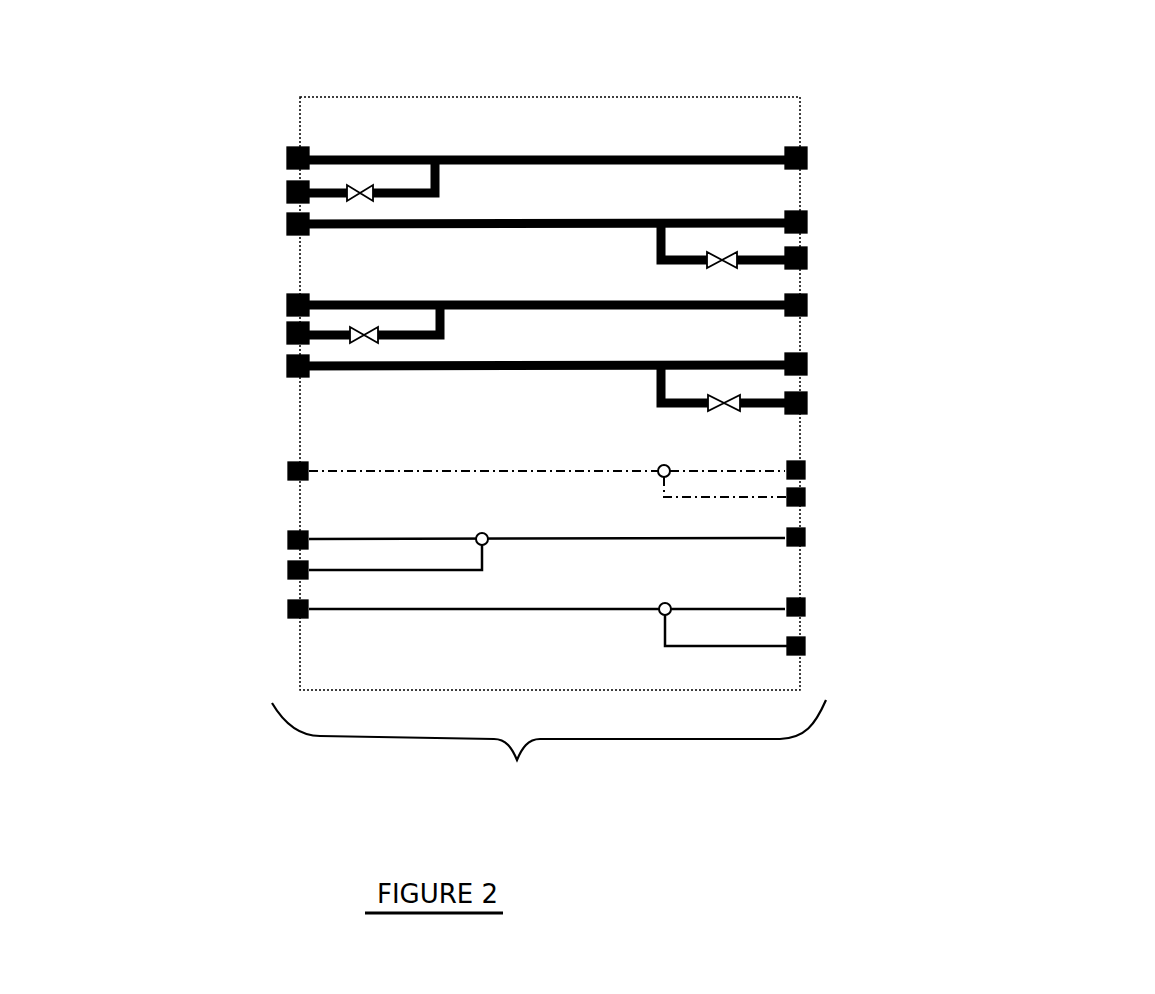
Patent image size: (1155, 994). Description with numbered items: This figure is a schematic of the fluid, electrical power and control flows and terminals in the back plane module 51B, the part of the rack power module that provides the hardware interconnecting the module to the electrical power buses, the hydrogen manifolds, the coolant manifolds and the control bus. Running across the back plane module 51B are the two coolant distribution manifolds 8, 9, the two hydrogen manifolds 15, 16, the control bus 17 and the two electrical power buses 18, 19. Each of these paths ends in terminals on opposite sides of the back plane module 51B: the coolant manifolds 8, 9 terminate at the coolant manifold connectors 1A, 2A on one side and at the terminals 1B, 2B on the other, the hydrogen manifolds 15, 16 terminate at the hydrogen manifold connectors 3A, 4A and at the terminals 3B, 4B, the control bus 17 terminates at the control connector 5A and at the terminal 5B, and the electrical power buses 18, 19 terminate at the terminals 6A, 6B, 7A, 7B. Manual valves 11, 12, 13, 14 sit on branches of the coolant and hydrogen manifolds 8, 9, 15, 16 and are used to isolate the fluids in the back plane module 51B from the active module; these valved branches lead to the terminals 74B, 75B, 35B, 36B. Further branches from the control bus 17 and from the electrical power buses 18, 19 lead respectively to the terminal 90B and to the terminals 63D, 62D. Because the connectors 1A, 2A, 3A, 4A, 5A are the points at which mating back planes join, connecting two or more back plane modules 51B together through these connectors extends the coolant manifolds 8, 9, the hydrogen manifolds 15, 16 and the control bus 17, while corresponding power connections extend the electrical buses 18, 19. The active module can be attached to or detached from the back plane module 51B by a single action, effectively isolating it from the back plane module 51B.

The coolant manifold 8 is at (559, 155).
The coolant manifold 9 is at (468, 237).
The manual valve 11 is at (372, 205).
The manual valve 12 is at (722, 270).
The manual valve 13 is at (360, 340).
The manual valve 14 is at (725, 410).
The hydrogen manifold 15 is at (640, 305).
The hydrogen manifold 16 is at (365, 372).
The control bus 17 is at (420, 467).
The electrical power bus 18 is at (645, 540).
The electrical power bus 19 is at (482, 611).
The coolant manifold connector 1A is at (808, 158).
The first conduit inlet port 1B is at (287, 152).
The coolant manifold connector 2A is at (808, 222).
The second conduit inlet port 2B is at (287, 222).
The hydrogen manifold connector 3A is at (808, 308).
The third conduit inlet port 3B is at (287, 303).
The hydrogen manifold connector 4A is at (808, 368).
The fourth conduit inlet port 4B is at (287, 362).
The control connector 5A is at (808, 468).
The fifth conduit inlet port 5B is at (287, 471).
The sixth conduit outlet port 6A is at (808, 540).
The sixth conduit inlet port 6B is at (287, 540).
The seventh conduit outlet port 7A is at (808, 607).
The seventh conduit inlet port 7B is at (287, 607).
The first valve branch port 74B is at (287, 190).
The second valve branch port 75B is at (808, 258).
The third valve branch port 35B is at (287, 333).
The fourth valve branch port 36B is at (808, 405).
The handle 90B is at (808, 500).
The sixth conduit branch port 63D is at (287, 568).
The seventh conduit branch port 62D is at (808, 646).
The back plane module 51B is at (549, 748).